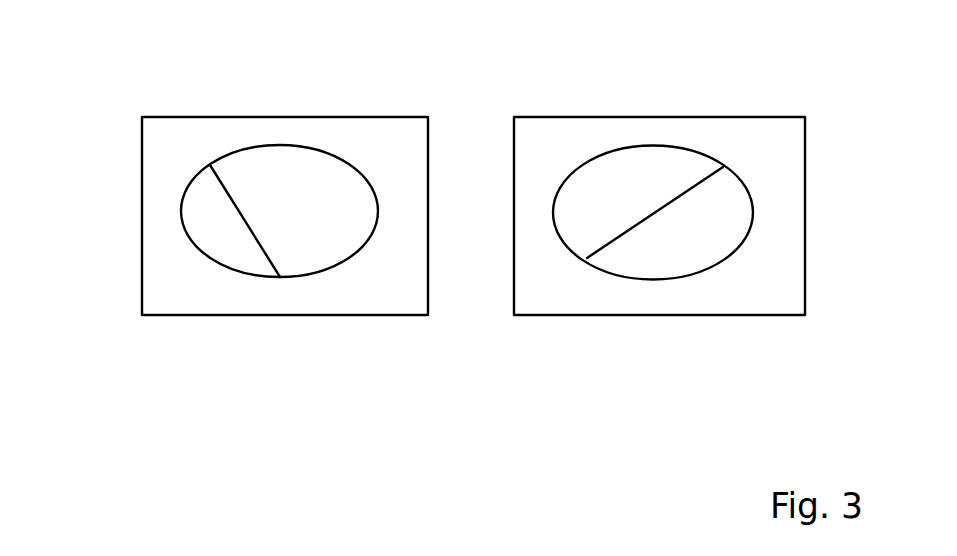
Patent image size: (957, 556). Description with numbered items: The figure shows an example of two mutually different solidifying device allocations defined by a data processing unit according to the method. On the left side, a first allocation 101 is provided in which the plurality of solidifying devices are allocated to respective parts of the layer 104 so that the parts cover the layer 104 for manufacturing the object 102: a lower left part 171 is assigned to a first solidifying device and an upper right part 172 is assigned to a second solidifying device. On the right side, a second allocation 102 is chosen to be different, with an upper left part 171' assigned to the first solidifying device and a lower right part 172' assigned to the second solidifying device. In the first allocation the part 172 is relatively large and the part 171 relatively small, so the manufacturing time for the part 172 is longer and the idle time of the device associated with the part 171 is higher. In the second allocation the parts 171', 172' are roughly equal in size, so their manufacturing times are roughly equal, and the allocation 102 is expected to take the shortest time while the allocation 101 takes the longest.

The first solidifying device allocation 101 is at (303, 117).
The second solidifying device allocation 102 is at (637, 117).
The layer 104 is at (165, 285).
The lower left part 171 is at (228, 312).
The upper right part 172 is at (279, 294).
The upper left part 171' is at (635, 314).
The lower right part 172' is at (653, 296).